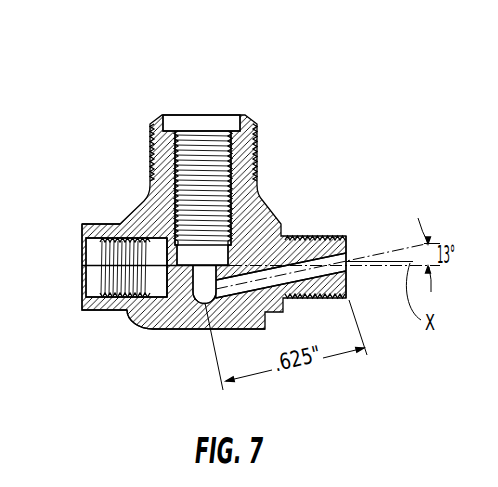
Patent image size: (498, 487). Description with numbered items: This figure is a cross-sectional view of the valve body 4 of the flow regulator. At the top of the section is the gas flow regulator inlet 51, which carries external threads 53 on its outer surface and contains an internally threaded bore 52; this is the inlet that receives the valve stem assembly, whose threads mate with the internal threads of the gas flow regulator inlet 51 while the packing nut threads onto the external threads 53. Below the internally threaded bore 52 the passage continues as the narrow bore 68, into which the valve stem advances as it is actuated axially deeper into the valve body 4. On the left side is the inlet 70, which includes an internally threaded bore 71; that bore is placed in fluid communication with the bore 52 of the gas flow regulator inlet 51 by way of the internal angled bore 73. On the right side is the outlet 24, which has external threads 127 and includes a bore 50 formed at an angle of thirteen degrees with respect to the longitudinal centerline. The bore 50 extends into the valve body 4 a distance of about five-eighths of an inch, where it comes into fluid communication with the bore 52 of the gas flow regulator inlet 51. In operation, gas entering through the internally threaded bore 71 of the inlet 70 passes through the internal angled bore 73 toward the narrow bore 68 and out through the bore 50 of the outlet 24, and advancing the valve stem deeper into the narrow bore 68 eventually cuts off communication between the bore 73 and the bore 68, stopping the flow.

The valve body 4 is at (108, 87).
The internally threaded bore 52 is at (230, 120).
The gas flow regulator inlet 51 is at (256, 134).
The external threads 53 is at (153, 162).
The inlet 70 is at (103, 224).
The internal angled bore 73 is at (168, 236).
The internally threaded bore 71 is at (86, 268).
The narrow bore 68 is at (153, 328).
The external threads 127 is at (310, 236).
The outlet 24 is at (355, 236).
The bore 50 is at (241, 330).